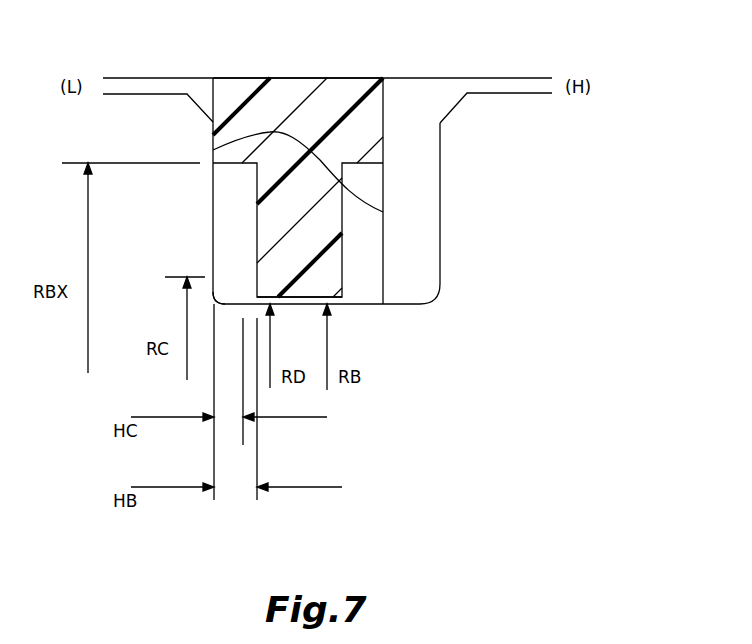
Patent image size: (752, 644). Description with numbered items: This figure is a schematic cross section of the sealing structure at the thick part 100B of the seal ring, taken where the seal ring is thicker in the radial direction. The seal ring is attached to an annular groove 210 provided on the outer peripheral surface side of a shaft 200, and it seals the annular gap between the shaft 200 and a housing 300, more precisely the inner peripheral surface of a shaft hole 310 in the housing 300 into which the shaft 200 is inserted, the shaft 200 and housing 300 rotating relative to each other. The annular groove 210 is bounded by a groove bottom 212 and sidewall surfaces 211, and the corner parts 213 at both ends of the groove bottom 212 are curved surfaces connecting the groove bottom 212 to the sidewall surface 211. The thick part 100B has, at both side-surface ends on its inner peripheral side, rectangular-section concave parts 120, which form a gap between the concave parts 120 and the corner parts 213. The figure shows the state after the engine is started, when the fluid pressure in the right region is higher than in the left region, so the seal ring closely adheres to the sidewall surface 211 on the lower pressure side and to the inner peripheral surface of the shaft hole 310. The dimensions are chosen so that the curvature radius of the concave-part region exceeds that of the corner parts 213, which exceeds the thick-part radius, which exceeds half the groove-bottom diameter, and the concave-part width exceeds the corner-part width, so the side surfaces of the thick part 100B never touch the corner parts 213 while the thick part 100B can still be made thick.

The thick part 100B is at (398, 142).
The concave parts 120 is at (254, 220).
The shaft 200 is at (480, 203).
The annular groove 210 is at (415, 251).
The sidewall surface 211 is at (383, 212).
The groove bottom 212 is at (346, 304).
The corner parts 213 is at (226, 303).
The housing 300 is at (327, 57).
The shaft hole 310 is at (418, 80).